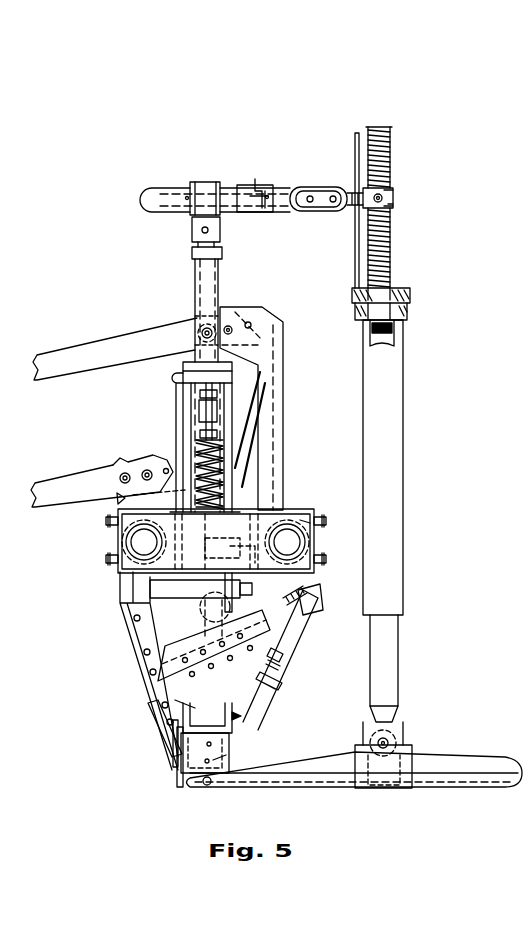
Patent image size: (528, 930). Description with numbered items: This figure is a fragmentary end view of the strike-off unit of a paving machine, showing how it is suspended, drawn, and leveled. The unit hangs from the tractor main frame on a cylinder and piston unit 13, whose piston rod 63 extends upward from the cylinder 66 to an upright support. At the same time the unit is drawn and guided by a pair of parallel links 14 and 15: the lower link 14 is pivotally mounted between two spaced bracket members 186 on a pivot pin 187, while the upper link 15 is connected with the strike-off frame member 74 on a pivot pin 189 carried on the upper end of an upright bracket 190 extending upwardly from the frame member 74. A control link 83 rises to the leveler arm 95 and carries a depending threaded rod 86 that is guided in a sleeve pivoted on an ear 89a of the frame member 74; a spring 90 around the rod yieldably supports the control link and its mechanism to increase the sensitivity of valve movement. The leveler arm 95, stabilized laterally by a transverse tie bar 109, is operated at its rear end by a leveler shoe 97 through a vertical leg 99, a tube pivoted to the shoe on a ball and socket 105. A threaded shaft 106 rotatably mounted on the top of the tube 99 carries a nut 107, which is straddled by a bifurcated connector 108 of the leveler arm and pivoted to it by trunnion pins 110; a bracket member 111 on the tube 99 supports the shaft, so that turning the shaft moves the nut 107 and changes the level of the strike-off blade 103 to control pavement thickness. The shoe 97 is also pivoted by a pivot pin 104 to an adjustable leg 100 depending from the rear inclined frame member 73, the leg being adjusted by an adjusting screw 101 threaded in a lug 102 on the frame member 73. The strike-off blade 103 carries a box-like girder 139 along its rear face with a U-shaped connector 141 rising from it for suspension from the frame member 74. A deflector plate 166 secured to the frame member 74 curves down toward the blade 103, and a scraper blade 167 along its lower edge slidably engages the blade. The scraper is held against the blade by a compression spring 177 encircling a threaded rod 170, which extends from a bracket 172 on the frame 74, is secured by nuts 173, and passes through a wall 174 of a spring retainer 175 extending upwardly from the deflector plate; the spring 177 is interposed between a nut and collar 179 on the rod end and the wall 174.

The cylinder and piston unit 13 is at (234, 470).
The parallel link 14 is at (72, 482).
The parallel link 15 is at (90, 345).
The piston rod 63 is at (225, 289).
The cylinder 66 is at (183, 386).
The rear inclined frame member 73 is at (160, 622).
The strike-off frame 74 is at (118, 548).
The control link 83 is at (195, 291).
The rod 86 is at (206, 420).
The ear 89a is at (300, 518).
The spring 90 is at (200, 488).
The leveler arm 95 is at (290, 190).
The leveler shoe 97 is at (333, 777).
The leg 99 is at (399, 673).
The adjustable leg 100 is at (235, 748).
The adjusting screw 101 is at (279, 684).
The lug 102 is at (285, 668).
The strike-off blade 103 is at (186, 782).
The pivot pin 104 is at (209, 787).
The ball and socket 105 is at (386, 742).
The threaded shaft 106 is at (392, 148).
The nut 107 is at (392, 210).
The bifurcated connector 108 is at (394, 194).
The tie bar 109 is at (258, 182).
The trunnion pin 110 is at (393, 196).
The bracket member 111 is at (355, 260).
The girder 139 is at (226, 764).
The connector 141 is at (240, 720).
The deflector plate 166 is at (162, 657).
The scraper blade 167 is at (172, 758).
The threaded rod 170 is at (322, 589).
The bracket 172 is at (323, 600).
The nut 173 is at (325, 620).
The wall 174 is at (270, 622).
The spring retainer 175 is at (165, 683).
The compression spring 177 is at (166, 743).
The nut and collar 179 is at (172, 703).
The bracket member 186 is at (150, 473).
The pivot pin 187 is at (120, 497).
The pivot pin 189 is at (231, 328).
The upright bracket 190 is at (283, 335).